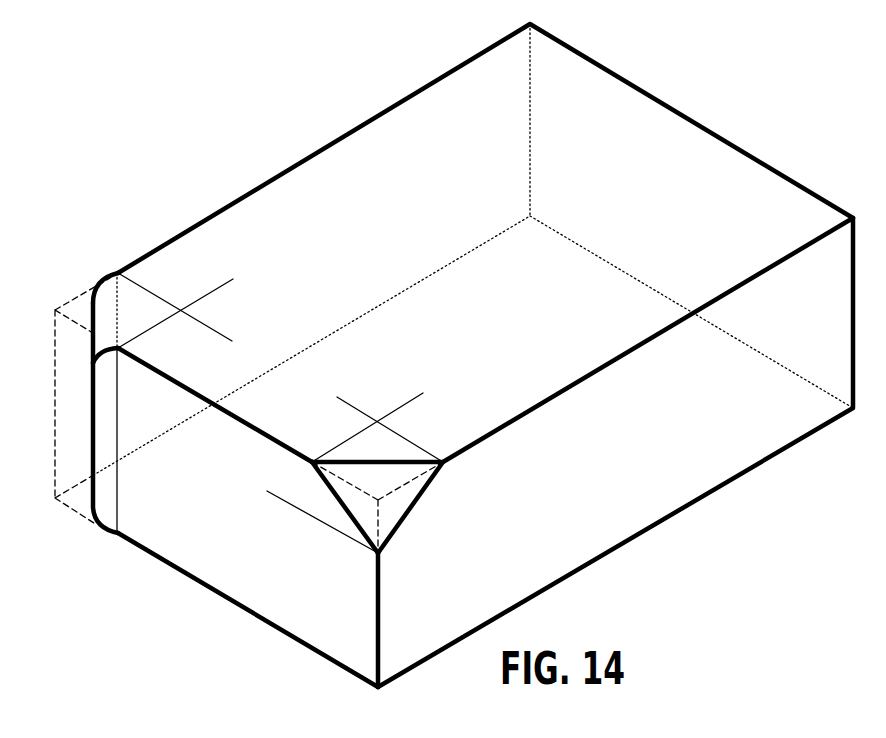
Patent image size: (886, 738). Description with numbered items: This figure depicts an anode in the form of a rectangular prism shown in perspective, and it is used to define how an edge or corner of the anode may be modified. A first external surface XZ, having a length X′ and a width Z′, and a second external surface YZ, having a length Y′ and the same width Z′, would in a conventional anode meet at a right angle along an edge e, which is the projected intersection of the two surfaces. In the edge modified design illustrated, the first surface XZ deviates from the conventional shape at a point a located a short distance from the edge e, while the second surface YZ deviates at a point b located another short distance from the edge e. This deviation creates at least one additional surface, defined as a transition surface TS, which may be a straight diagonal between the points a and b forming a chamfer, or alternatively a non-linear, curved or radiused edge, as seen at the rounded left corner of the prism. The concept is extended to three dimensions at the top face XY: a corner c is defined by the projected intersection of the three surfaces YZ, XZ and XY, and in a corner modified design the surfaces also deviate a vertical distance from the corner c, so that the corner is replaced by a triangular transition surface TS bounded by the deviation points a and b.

The point a is at (93, 363).
The point b is at (118, 273).
The corner c is at (378, 500).
The edge e is at (55, 369).
The transition surface TS is at (103, 440).
The surface XY is at (485, 148).
The surface XZ is at (248, 517).
The surface YZ is at (275, 248).
The length X′ is at (630, 345).
The length Y′ is at (708, 136).
The width Z′ is at (237, 424).